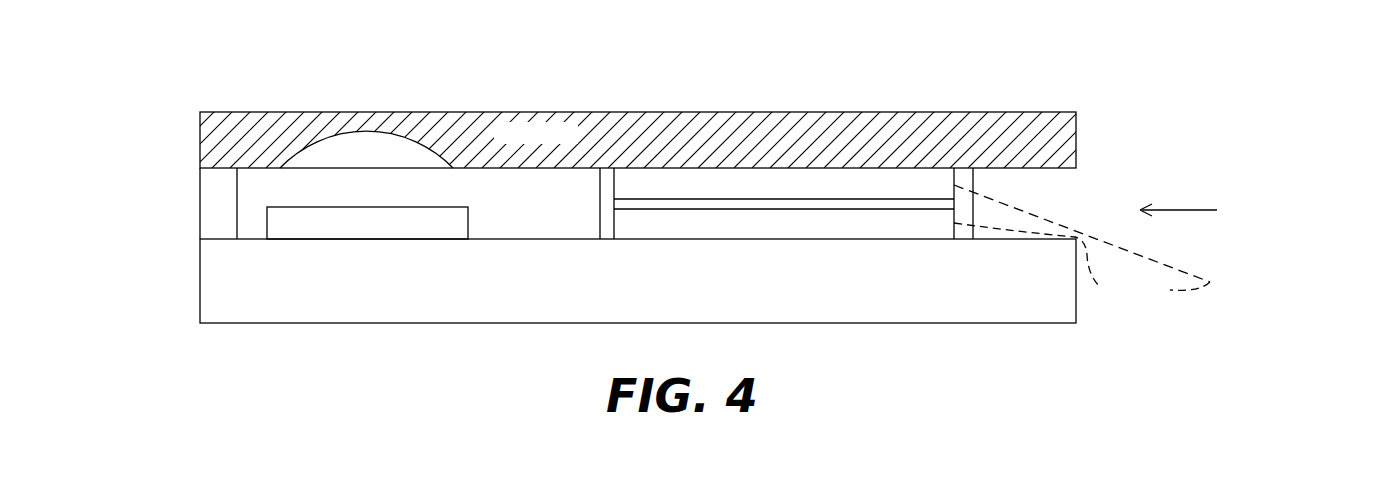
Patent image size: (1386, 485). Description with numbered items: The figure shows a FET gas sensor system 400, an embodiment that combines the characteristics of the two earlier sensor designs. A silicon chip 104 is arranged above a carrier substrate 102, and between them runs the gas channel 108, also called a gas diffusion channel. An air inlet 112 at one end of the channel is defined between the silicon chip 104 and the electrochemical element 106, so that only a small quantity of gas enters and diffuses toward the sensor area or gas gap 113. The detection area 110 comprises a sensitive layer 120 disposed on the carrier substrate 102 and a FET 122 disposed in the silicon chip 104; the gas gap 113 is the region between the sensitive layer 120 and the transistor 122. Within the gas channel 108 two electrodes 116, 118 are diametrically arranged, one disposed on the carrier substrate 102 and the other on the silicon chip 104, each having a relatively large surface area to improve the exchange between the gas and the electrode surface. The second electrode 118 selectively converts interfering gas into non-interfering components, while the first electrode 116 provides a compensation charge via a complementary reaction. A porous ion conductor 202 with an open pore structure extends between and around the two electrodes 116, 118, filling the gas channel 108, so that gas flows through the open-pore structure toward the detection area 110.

The FET gas sensor system 400 is at (1010, 86).
The silicon chip 104 is at (688, 112).
The FET 122 is at (353, 129).
The sensor area/gas gap 113 is at (363, 188).
The detection area 110 is at (260, 199).
The sensitive layer 120 is at (390, 241).
The gas channel 108 is at (563, 221).
The second active electrode 118 is at (660, 241).
The first active electrode 116 is at (853, 199).
The ion conductor 202 is at (963, 241).
The electrochemical element 106 is at (978, 183).
The air inlet 112 is at (1073, 208).
The carrier substrate 102 is at (985, 324).